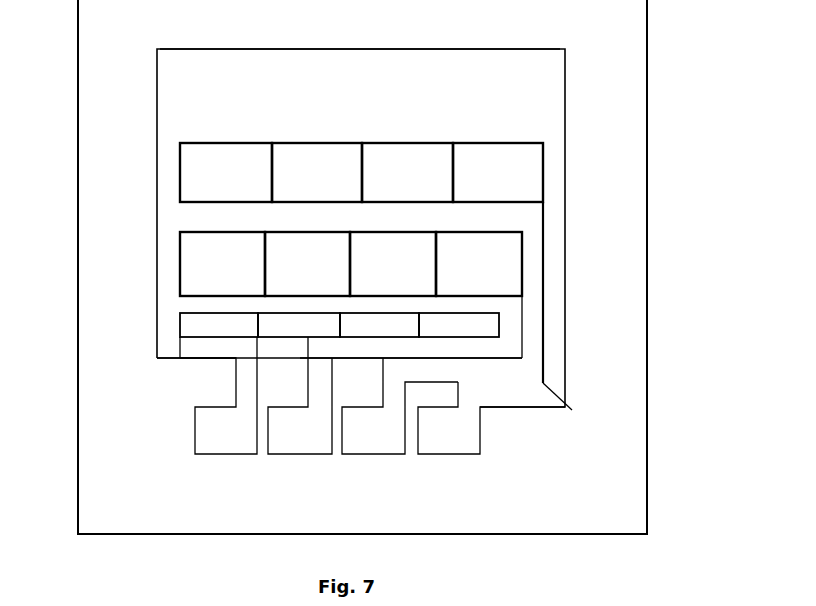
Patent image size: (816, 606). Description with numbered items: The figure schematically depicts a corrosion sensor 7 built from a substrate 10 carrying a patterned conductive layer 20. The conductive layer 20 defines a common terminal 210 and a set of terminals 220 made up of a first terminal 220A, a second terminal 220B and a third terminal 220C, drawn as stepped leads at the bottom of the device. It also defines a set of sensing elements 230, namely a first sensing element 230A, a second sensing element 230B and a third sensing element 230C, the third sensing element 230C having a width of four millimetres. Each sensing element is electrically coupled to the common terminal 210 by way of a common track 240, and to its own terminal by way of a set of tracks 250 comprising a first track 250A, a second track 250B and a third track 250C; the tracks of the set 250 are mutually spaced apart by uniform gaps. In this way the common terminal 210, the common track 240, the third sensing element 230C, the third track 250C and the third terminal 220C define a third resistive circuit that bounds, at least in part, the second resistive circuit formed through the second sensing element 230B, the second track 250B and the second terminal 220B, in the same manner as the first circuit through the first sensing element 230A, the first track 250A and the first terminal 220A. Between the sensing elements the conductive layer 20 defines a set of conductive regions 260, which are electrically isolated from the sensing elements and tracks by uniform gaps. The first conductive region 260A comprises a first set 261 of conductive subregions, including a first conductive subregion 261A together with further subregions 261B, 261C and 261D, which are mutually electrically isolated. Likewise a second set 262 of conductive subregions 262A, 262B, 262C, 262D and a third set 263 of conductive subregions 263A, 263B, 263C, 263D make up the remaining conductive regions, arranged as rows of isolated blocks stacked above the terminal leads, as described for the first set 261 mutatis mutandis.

The substrate 10 is at (78, 534).
The patterned conductive layer 20 is at (592, 360).
The corrosion sensor 7 is at (696, 495).
The common terminal 210 is at (195, 454).
The set of terminals 220 is at (416, 436).
The first terminal 220A is at (332, 454).
The second terminal 220B is at (407, 454).
The third terminal 220C is at (480, 454).
The set of sensing elements 230 is at (147, 226).
The first sensing element 230A is at (202, 305).
The second sensing element 230B is at (208, 226).
The third sensing element 230C is at (227, 62).
The common track 240 is at (157, 358).
The set of tracks 250 is at (452, 438).
The first track 250A is at (495, 359).
The second track 250B is at (568, 412).
The third track 250C is at (565, 288).
The set of conductive regions 260 is at (147, 155).
The first conductive region 260A is at (280, 262).
The first set of conductive subregions 261 is at (360, 250).
The first conductive subregion 261A is at (199, 285).
The conductive subregion 261B is at (284, 285).
The conductive subregion 261C is at (370, 285).
The conductive subregion 261D is at (456, 285).
The second set of conductive subregions 262 is at (360, 301).
The conductive subregion 262A is at (196, 333).
The conductive subregion 262B is at (276, 333).
The conductive subregion 262C is at (357, 333).
The conductive subregion 262D is at (437, 333).
The third set of conductive subregions 263 is at (368, 149).
The conductive subregion 263A is at (203, 184).
The conductive subregion 263B is at (294, 184).
The conductive subregion 263C is at (384, 184).
The conductive subregion 263D is at (475, 184).